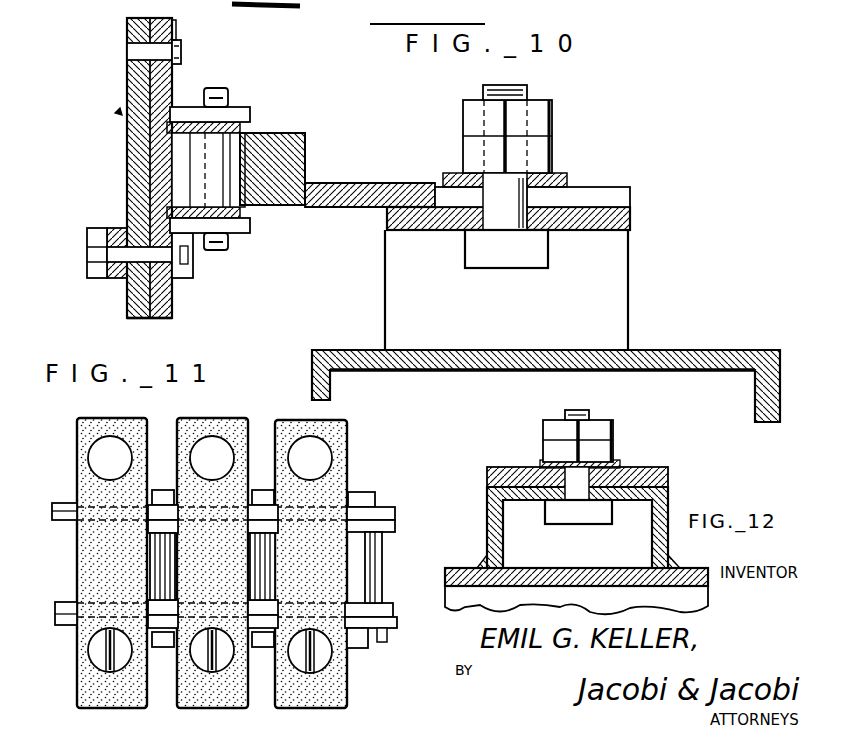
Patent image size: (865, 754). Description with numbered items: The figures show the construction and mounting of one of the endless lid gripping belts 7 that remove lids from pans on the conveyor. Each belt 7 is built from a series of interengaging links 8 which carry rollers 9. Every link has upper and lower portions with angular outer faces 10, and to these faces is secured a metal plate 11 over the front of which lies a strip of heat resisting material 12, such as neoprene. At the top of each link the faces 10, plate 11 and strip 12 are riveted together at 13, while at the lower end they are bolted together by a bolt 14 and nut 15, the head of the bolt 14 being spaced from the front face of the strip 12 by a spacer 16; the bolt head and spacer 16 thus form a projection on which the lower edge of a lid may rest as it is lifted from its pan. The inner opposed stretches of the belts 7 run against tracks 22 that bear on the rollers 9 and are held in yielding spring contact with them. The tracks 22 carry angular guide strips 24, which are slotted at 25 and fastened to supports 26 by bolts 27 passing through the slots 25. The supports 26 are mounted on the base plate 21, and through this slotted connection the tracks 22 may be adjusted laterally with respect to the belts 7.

In FIG. 10, the lid gripping belt 7 is at (118, 112).
In FIG. 10, the interengaging links 8 is at (212, 118).
In FIG. 11, the interengaging links 8 is at (378, 522).
In FIG. 10, the rollers 9 is at (243, 208).
In FIG. 11, the rollers 9 is at (378, 567).
In FIG. 10, the angular outer faces 10 is at (165, 28).
In FIG. 10, the metal plate 11 is at (142, 318).
In FIG. 10, the strip of heat resisting material 12 is at (127, 25).
In FIG. 11, the strip of heat resisting material 12 is at (228, 413).
In FIG. 10, the rivet 13 is at (127, 52).
In FIG. 11, the rivet 13 is at (97, 462).
In FIG. 10, the bolt 14 is at (90, 258).
In FIG. 11, the bolt 14 is at (93, 650).
In FIG. 10, the nut 15 is at (195, 262).
In FIG. 10, the spacer 16 is at (115, 228).
In FIG. 10, the base plate 21 is at (645, 350).
In FIG. 12, the base plate 21 is at (548, 572).
In FIG. 10, the tracks 22 is at (280, 147).
In FIG. 10, the angular guide strips 24 is at (346, 188).
In FIG. 12, the angular guide strips 24 is at (660, 474).
In FIG. 10, the slots 25 is at (590, 197).
In FIG. 12, the slots 25 is at (615, 455).
In FIG. 10, the supports 26 is at (613, 260).
In FIG. 12, the supports 26 is at (662, 508).
In FIG. 10, the bolts 27 is at (505, 225).
In FIG. 12, the bolts 27 is at (581, 406).